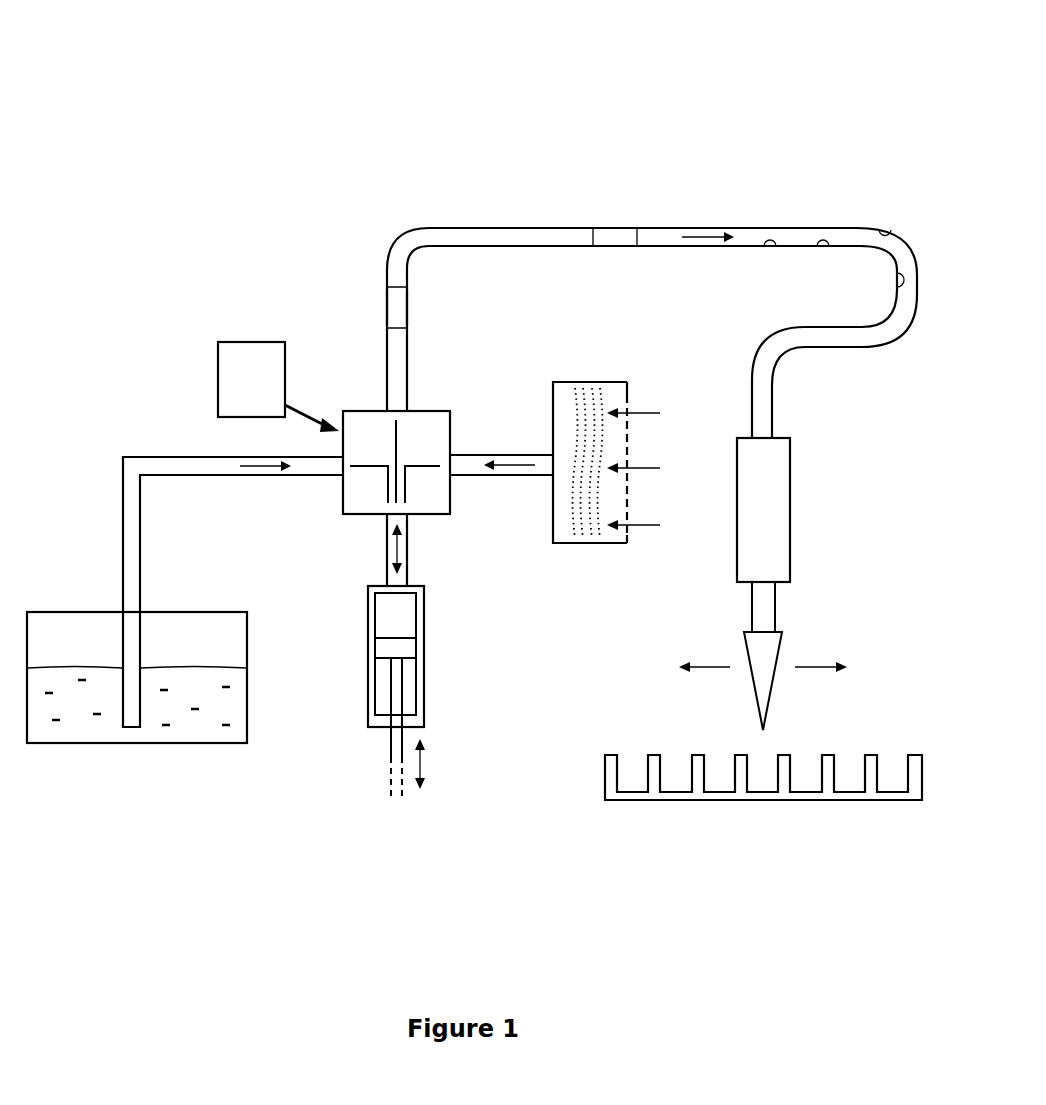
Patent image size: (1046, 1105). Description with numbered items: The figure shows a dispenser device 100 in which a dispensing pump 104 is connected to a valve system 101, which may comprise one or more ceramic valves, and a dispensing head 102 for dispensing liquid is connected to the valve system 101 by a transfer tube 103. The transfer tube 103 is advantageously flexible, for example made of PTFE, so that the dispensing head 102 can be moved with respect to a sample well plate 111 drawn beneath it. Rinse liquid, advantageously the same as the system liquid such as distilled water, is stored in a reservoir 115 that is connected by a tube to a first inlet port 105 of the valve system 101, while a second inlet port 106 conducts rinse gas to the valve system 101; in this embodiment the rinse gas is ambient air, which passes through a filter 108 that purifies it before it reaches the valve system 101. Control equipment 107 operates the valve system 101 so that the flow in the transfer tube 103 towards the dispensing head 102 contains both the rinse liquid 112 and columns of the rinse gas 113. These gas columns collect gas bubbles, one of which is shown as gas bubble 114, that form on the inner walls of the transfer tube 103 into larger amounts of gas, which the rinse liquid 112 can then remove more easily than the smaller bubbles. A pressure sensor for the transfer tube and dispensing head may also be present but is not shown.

The dispenser device 100 is at (235, 106).
The valve system 101 is at (428, 411).
The dispensing head 102 is at (790, 525).
The transfer tube 103 is at (796, 228).
The dispensing pump 104 is at (424, 648).
The first inlet port 105 is at (333, 475).
The second inlet port 106 is at (453, 477).
The control equipment 107 is at (278, 387).
The filter 108 is at (572, 382).
The sample well plate 111 is at (783, 800).
The rinse liquid 112 is at (478, 237).
The rinse gas 113 is at (617, 237).
The gas bubble 114 is at (823, 250).
The reservoir 115 is at (97, 610).